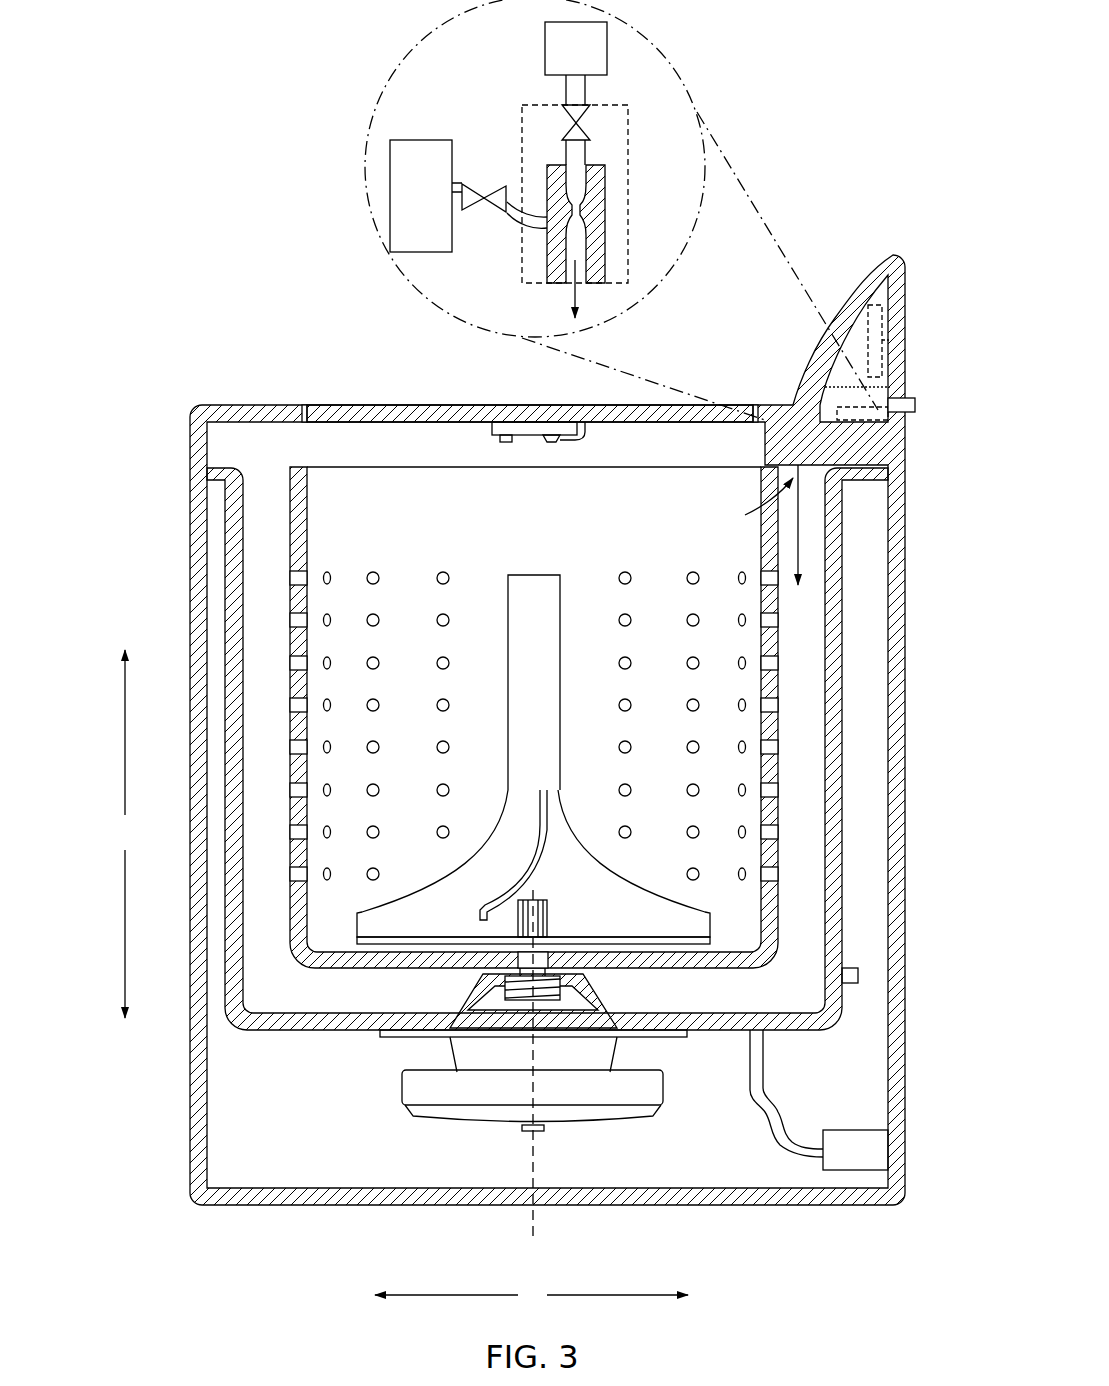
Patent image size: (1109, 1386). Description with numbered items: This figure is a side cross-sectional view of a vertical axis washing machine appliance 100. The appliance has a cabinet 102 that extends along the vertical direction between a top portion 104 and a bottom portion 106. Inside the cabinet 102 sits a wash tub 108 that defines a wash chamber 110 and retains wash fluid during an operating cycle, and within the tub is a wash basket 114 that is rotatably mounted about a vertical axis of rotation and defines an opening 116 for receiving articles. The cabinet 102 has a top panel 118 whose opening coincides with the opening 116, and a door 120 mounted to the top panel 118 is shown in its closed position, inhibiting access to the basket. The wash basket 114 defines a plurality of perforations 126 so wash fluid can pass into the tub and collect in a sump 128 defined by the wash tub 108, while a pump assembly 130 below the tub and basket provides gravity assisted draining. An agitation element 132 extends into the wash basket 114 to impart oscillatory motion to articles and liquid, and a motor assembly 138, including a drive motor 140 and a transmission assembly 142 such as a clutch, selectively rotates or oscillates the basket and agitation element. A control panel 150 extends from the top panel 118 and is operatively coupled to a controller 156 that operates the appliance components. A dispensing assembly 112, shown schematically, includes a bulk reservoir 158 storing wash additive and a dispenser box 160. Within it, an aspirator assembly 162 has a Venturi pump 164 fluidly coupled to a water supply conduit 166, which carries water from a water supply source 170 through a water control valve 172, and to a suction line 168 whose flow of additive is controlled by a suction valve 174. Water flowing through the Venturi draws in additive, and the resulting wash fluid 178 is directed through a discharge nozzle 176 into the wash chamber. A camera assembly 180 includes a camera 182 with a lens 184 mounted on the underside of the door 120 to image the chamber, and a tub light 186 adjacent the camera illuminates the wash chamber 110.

The washing machine appliance 100 is at (232, 290).
The cabinet 102 is at (198, 513).
The top portion 104 is at (185, 413).
The bottom portion 106 is at (185, 1200).
The wash tub 108 is at (838, 875).
The wash chamber 110 is at (265, 685).
The dispensing assembly 112 is at (886, 415).
The wash basket 114 is at (290, 495).
The opening 116 is at (627, 465).
The top panel 118 is at (230, 405).
The door 120 is at (423, 405).
The perforations 126 is at (455, 570).
The sump 128 is at (473, 807).
The pump assembly 130 is at (803, 1157).
The agitation element 132 is at (540, 582).
The motor assembly 138 is at (487, 1060).
The drive motor 140 is at (657, 1090).
The transmission assembly 142 is at (600, 1040).
The control panel 150 is at (845, 302).
The controller 156 is at (905, 290).
The bulk reservoir 158 is at (404, 206).
The dispenser box 160 is at (628, 117).
The aspirator assembly 162 is at (580, 184).
The Venturi pump 164 is at (600, 195).
The water supply conduit 166 is at (586, 92).
The suction line 168 is at (512, 230).
The water supply source 170 is at (858, 976).
The water control valve 172 is at (590, 138).
The suction valve 174 is at (495, 222).
The discharge nozzle 176 is at (540, 310).
The wash fluid 178 is at (798, 535).
The camera assembly 180 is at (525, 420).
The camera 182 is at (581, 428).
The lens 184 is at (555, 447).
The tub light 186 is at (505, 442).